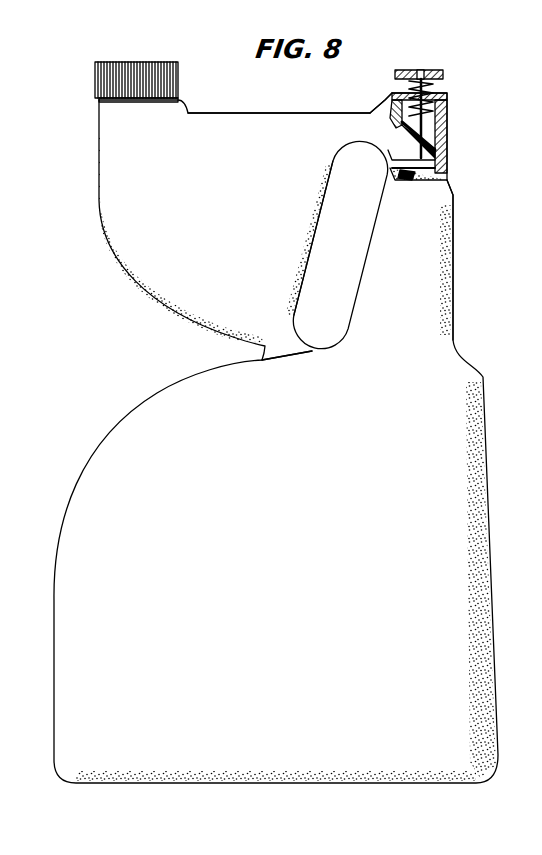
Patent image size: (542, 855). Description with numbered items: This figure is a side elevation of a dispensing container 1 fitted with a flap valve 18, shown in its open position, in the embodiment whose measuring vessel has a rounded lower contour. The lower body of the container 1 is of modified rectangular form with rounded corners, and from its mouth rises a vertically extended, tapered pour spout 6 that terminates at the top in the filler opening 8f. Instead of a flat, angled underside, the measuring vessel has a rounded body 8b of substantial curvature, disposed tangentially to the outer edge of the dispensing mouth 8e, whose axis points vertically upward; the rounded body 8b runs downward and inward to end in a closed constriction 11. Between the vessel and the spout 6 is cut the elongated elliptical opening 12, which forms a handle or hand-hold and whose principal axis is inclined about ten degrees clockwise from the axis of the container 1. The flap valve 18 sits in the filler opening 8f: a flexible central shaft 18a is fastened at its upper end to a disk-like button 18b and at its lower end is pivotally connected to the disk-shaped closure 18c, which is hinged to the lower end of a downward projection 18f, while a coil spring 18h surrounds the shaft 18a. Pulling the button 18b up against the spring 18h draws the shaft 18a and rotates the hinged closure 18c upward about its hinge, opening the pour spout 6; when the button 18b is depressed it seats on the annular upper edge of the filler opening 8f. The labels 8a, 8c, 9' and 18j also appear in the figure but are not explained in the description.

The container 1 is at (487, 425).
The tapered pour spout 6 is at (448, 238).
The top surface of handle portion 8a is at (265, 113).
The rounded body 8b is at (146, 283).
The channel wall 8c is at (322, 232).
The dispensing mouth 8e is at (98, 100).
The filler opening 8f is at (449, 126).
The cap 9' is at (110, 75).
The closed constriction 11 is at (265, 357).
The elliptical handle opening 12 is at (337, 258).
The flap valve 18 is at (402, 70).
The flexible shaft 18a is at (420, 70).
The button 18b is at (444, 73).
The hinged closure 18c is at (388, 150).
The downward projection 18f is at (392, 103).
The coil spring 18h is at (404, 93).
The valve outlet 18j is at (447, 178).